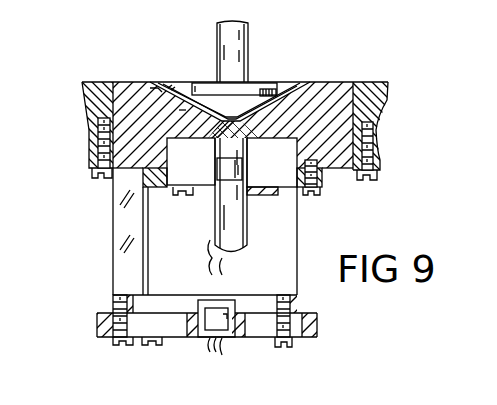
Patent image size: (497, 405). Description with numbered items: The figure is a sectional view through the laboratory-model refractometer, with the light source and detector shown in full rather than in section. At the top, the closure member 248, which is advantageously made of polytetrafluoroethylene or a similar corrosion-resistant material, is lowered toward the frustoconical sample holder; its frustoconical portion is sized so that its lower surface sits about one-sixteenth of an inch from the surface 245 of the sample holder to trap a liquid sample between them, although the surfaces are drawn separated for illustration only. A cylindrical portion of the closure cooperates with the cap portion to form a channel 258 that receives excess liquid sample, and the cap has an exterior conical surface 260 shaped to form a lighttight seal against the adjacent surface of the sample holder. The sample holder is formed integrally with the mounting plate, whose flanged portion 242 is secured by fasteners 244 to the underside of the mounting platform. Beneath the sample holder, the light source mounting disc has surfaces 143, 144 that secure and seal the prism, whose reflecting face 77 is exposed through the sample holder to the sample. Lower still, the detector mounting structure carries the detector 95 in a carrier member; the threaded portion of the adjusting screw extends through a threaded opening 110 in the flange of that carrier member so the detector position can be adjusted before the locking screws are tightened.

The reflecting face 77 is at (248, 202).
The detector 95 is at (184, 337).
The threaded opening 110 is at (234, 335).
The surface 143 is at (213, 138).
The surface 144 is at (257, 145).
The flanged portion 242 is at (90, 150).
The fasteners 244 is at (92, 169).
The surface 245 is at (247, 103).
The closure member 248 is at (210, 103).
The channel 258 is at (286, 97).
The exterior conical surface 260 is at (150, 90).